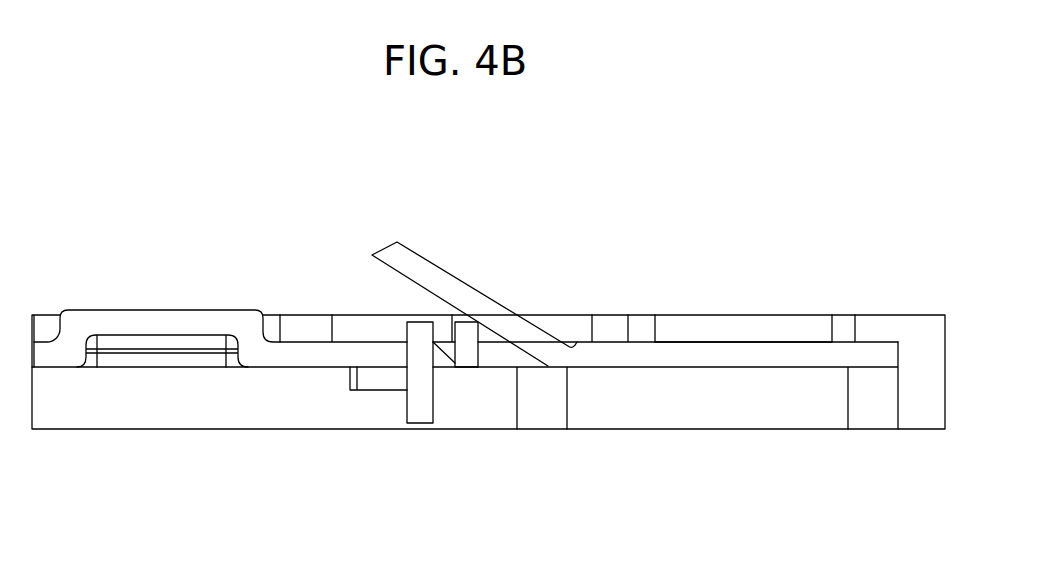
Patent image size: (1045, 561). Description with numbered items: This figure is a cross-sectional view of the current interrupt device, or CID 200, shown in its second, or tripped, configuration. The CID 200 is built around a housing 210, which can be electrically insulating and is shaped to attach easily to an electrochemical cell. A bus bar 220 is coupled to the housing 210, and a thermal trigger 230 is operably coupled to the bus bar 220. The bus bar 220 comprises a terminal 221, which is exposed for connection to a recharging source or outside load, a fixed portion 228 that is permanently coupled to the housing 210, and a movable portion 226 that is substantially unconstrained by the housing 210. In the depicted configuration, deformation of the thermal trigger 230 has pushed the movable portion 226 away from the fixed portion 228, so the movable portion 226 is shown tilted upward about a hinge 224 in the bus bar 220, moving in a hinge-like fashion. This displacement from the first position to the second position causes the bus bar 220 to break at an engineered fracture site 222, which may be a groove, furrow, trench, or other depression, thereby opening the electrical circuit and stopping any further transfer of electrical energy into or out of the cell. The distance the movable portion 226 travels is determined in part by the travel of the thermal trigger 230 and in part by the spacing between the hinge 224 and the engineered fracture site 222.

The CID 200 is at (758, 187).
The housing 210 is at (660, 403).
The bus bar 220 is at (767, 348).
The terminal 221 is at (112, 325).
The engineered fracture site 222 is at (352, 365).
The hinge 224 is at (573, 342).
The movable portion 226 is at (397, 243).
The fixed portion 228 is at (683, 348).
The thermal trigger 230 is at (423, 410).